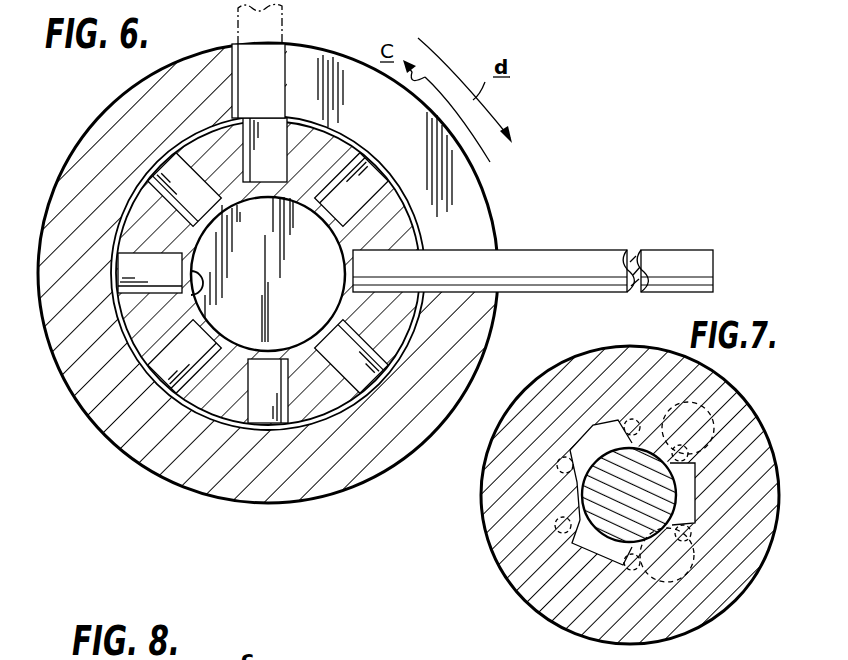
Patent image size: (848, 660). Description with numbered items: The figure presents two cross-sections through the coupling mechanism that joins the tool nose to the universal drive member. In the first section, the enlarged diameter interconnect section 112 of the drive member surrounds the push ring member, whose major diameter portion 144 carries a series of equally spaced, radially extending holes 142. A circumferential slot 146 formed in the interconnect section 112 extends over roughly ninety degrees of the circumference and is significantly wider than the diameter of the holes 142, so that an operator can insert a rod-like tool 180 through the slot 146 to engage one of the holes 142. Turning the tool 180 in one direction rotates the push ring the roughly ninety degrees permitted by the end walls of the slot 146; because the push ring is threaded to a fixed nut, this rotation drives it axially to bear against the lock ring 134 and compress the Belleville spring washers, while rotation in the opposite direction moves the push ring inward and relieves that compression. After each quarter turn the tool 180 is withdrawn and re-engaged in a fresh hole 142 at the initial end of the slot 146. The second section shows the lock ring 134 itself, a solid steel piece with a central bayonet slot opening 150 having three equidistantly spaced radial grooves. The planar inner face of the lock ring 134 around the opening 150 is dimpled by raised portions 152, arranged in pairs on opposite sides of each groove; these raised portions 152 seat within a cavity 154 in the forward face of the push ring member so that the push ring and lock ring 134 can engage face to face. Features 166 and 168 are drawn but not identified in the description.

In FIG. 6, the interconnect section 112 is at (468, 345).
In FIG. 7, the lock ring 134 is at (738, 578).
In FIG. 6, the radially extending holes 142 is at (376, 191).
In FIG. 6, the major diameter portion 144 is at (190, 418).
In FIG. 6, the circumferential slot 146 is at (473, 217).
In FIG. 7, the bayonet slot opening 150 is at (577, 489).
In FIG. 7, the raised portions 152 is at (656, 587).
In FIG. 6, the cavity 154 is at (192, 300).
In FIG. 7, the pin position 166 is at (699, 424).
In FIG. 7, the recess 168 is at (610, 462).
In FIG. 6, the rod-like tool 180 is at (238, 30).